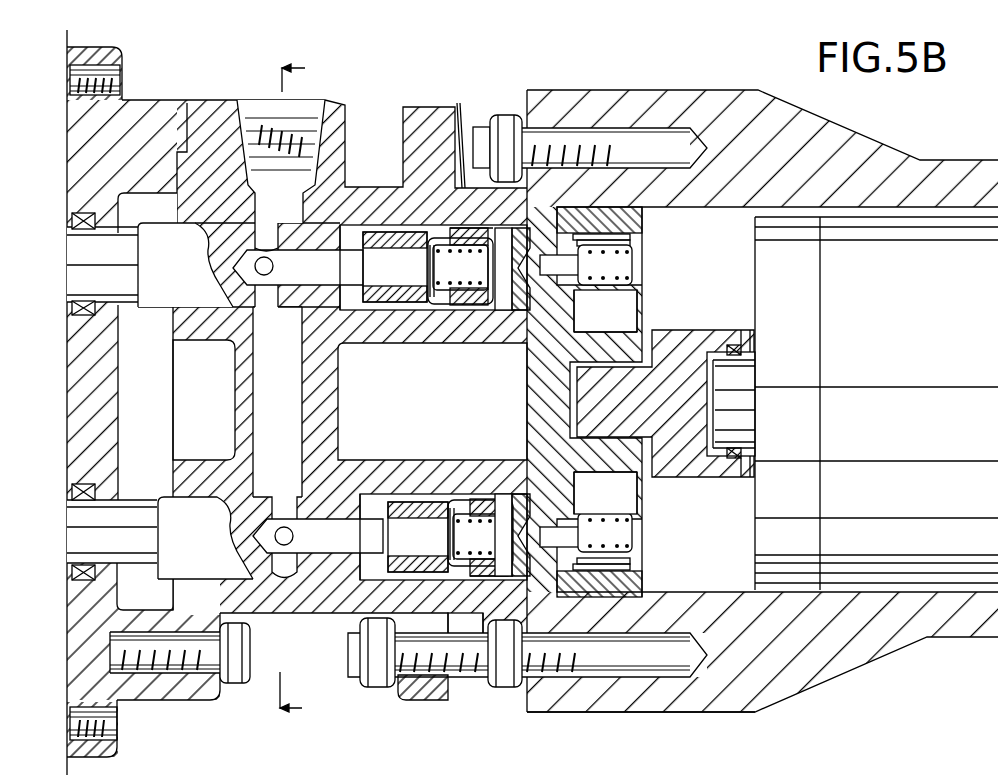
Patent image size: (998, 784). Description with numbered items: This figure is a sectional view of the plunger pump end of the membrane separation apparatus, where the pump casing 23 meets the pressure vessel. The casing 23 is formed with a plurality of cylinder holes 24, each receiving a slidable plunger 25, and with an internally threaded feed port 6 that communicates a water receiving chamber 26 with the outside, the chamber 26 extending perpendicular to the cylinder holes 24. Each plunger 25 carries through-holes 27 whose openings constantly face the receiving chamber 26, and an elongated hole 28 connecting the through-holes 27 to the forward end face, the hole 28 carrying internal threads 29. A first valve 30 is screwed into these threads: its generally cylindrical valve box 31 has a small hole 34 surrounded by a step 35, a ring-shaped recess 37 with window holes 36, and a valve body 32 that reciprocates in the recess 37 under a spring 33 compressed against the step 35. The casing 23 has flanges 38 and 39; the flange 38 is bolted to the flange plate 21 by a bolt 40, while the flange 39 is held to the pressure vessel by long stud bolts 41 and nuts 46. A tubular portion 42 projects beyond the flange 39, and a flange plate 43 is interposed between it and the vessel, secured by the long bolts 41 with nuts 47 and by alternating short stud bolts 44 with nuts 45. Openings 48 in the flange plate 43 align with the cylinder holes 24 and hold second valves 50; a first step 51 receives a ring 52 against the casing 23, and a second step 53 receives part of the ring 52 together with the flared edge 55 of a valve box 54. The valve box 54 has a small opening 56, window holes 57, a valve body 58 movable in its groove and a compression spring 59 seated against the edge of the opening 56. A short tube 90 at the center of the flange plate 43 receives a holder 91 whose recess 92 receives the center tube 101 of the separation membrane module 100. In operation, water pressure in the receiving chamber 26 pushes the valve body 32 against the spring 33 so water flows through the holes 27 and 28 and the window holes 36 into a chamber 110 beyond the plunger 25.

The feed port 6 is at (312, 118).
The flange plate 21 is at (112, 759).
The casing 23 is at (330, 615).
The cylinder holes 24 is at (170, 580).
The plunger 25 is at (170, 508).
The water receiving chamber 26 is at (263, 420).
The through-holes 27 is at (295, 538).
The elongated hole 28 is at (352, 480).
The internal threads 29 is at (376, 402).
The first valve 30 is at (495, 500).
The valve box 31 is at (470, 500).
The valve body 32 is at (448, 540).
The spring 33 is at (470, 402).
The small hole 34 is at (490, 310).
The step 35 is at (512, 494).
The window holes 36 is at (443, 492).
The ring-shaped recess 37 is at (455, 402).
The flange 38 is at (196, 700).
The flange 39 is at (430, 702).
The bolt 40 is at (237, 685).
The long stud bolts 41 is at (470, 679).
The tubular portion 42 is at (459, 112).
The flange plate 43 is at (553, 714).
The short stud bolts 44 is at (615, 128).
The nuts 45 is at (510, 113).
The nuts 46 is at (375, 690).
The nuts 47 is at (504, 689).
The openings 48 is at (555, 580).
The second valves 50 is at (645, 549).
The first step 51 is at (562, 505).
The ring 52 is at (580, 585).
The second step 53 is at (632, 562).
The valve box 54 is at (632, 490).
The flared edge 55 is at (605, 410).
The small opening 56 is at (633, 533).
The window holes 57 is at (605, 516).
The valve body 58 is at (595, 512).
The compression spring 59 is at (632, 514).
The short tube 90 is at (646, 358).
The holder 91 is at (742, 470).
The recess 92 is at (718, 460).
The separation membrane module 100 is at (944, 542).
The center tube 101 is at (750, 405).
The chamber 110 is at (514, 402).